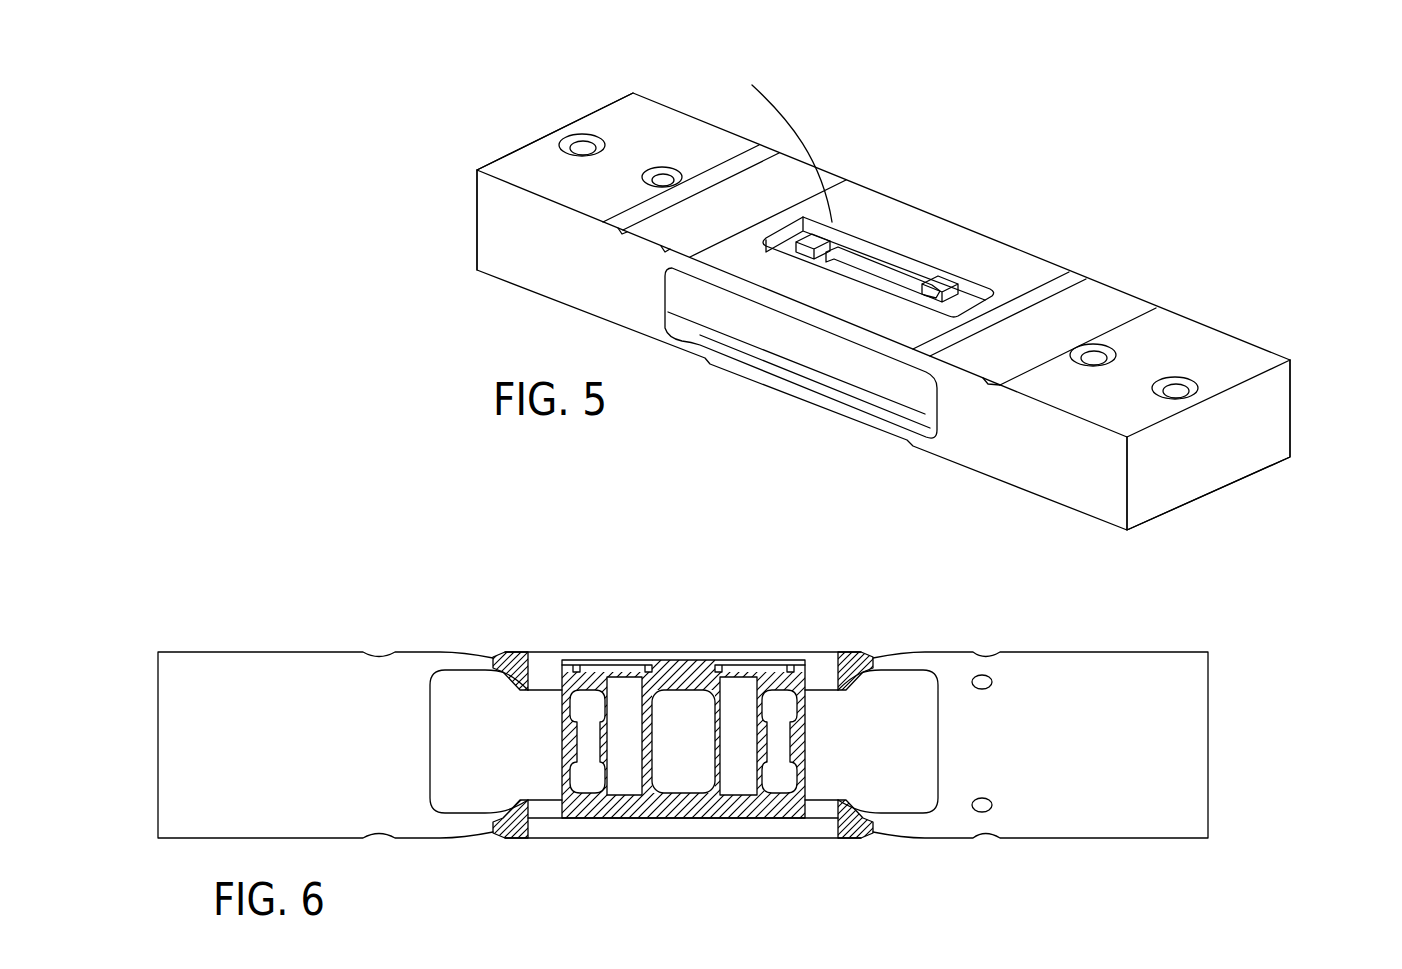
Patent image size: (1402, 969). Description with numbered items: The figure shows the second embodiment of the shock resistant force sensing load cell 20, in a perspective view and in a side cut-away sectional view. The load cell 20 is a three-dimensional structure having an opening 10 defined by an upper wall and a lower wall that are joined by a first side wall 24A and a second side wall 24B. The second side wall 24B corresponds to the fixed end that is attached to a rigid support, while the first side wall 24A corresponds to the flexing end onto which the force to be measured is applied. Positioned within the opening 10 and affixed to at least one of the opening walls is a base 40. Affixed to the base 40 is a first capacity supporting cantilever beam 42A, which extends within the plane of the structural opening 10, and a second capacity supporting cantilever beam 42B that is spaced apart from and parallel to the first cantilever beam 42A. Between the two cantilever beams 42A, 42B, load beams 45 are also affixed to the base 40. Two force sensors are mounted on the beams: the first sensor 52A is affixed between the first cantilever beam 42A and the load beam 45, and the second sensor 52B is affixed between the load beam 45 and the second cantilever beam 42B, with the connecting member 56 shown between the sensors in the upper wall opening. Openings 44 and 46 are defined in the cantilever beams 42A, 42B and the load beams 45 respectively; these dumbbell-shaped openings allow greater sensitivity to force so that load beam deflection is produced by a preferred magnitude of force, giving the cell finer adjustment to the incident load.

In FIG. 5, the opening 10 is at (980, 290).
In FIG. 5, the force sensing load cell 20 is at (1285, 131).
In FIG. 6, the force sensing load cell 20 is at (360, 503).
In FIG. 5, the first side wall 24A is at (680, 154).
In FIG. 6, the first side wall 24A is at (293, 794).
In FIG. 5, the second side wall 24B is at (1214, 344).
In FIG. 6, the second side wall 24B is at (1122, 781).
In FIG. 6, the base 40 is at (793, 820).
In FIG. 6, the first capacity supporting cantilever beam 42A is at (607, 752).
In FIG. 6, the second capacity supporting cantilever beam 42B is at (757, 750).
In FIG. 6, the opening 44 is at (562, 656).
In FIG. 6, the load beam 45 is at (722, 750).
In FIG. 6, the opening 46 is at (806, 657).
In FIG. 5, the first sensor 52A is at (840, 262).
In FIG. 6, the first sensor 52A is at (645, 661).
In FIG. 5, the second sensor 52B is at (975, 285).
In FIG. 6, the second sensor 52B is at (747, 625).
In FIG. 5, the connecting member 56 is at (883, 258).